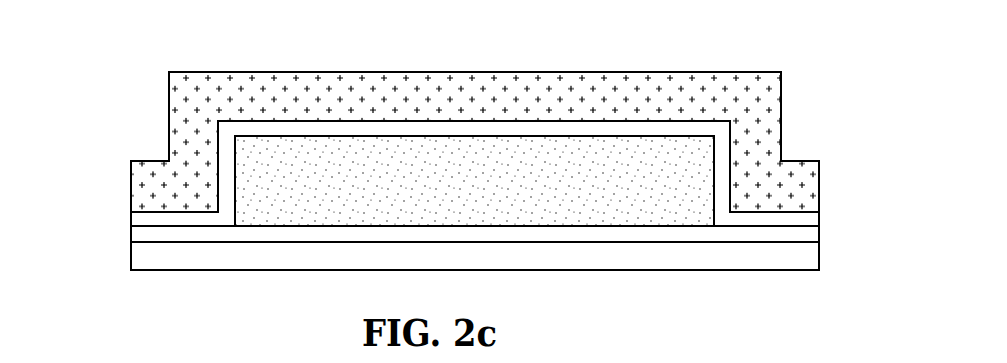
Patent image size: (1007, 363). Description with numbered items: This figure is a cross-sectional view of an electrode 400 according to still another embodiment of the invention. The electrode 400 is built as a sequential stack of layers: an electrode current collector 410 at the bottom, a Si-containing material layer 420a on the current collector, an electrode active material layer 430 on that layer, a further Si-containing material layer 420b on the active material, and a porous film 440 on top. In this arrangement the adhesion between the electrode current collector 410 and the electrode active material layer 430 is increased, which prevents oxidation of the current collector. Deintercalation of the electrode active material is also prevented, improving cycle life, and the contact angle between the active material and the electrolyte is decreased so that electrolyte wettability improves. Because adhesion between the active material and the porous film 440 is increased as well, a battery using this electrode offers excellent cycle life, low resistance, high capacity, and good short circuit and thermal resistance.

The electrode 400 is at (134, 39).
The electrode current collector 410 is at (808, 257).
The Si-containing material layer 420a is at (802, 232).
The Si-containing material layer 420b is at (634, 128).
The electrode active material layer 430 is at (703, 154).
The porous film 440 is at (540, 82).